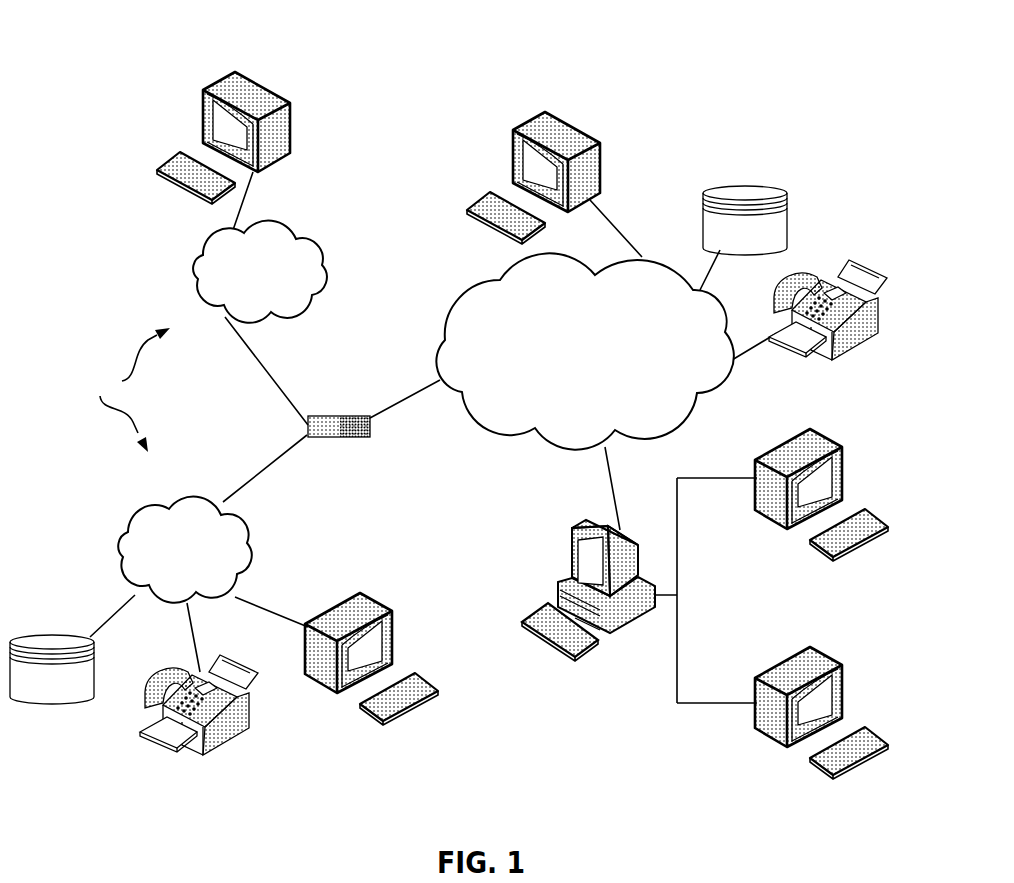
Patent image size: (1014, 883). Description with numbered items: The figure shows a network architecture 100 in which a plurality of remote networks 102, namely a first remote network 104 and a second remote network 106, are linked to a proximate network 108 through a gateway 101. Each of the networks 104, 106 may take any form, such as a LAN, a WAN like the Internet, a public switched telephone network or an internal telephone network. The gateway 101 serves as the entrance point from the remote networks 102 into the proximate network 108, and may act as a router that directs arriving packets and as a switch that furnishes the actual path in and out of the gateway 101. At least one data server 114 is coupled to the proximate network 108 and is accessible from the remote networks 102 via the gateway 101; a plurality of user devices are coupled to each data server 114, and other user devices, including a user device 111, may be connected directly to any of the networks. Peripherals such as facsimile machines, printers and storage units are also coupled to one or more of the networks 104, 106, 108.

The architecture 100 is at (128, 51).
The gateway 101 is at (325, 415).
The remote networks 102 is at (127, 390).
The first remote network 104 is at (110, 522).
The second remote network 106 is at (333, 242).
The proximate network 108 is at (695, 418).
The user device 111 is at (597, 146).
The data server 114 is at (572, 545).